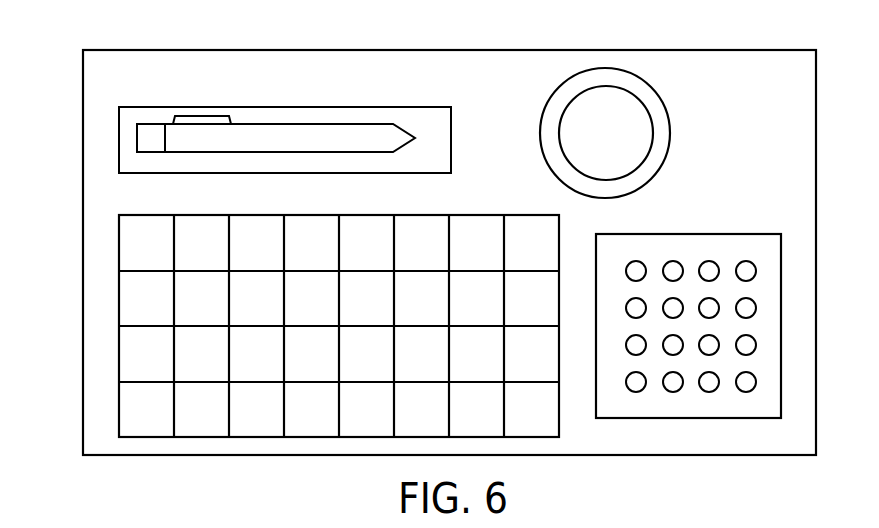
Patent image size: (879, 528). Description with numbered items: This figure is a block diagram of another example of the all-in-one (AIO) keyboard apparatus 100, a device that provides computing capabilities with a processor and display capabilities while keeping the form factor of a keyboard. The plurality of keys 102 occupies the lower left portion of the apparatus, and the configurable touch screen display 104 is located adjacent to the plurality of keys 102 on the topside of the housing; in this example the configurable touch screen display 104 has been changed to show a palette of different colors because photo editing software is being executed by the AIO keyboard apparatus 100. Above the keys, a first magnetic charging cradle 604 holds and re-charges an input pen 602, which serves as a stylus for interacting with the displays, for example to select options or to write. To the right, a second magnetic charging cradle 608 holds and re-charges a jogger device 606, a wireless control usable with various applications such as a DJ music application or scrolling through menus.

The all-in-one keyboard apparatus 100 is at (123, 33).
The plurality of keys 102 is at (119, 237).
The configurable touch screen display 104 is at (694, 233).
The input pen 602 is at (208, 116).
The first magnetic charging cradle 604 is at (368, 107).
The jogger device 606 is at (642, 137).
The second magnetic charging cradle 608 is at (653, 82).